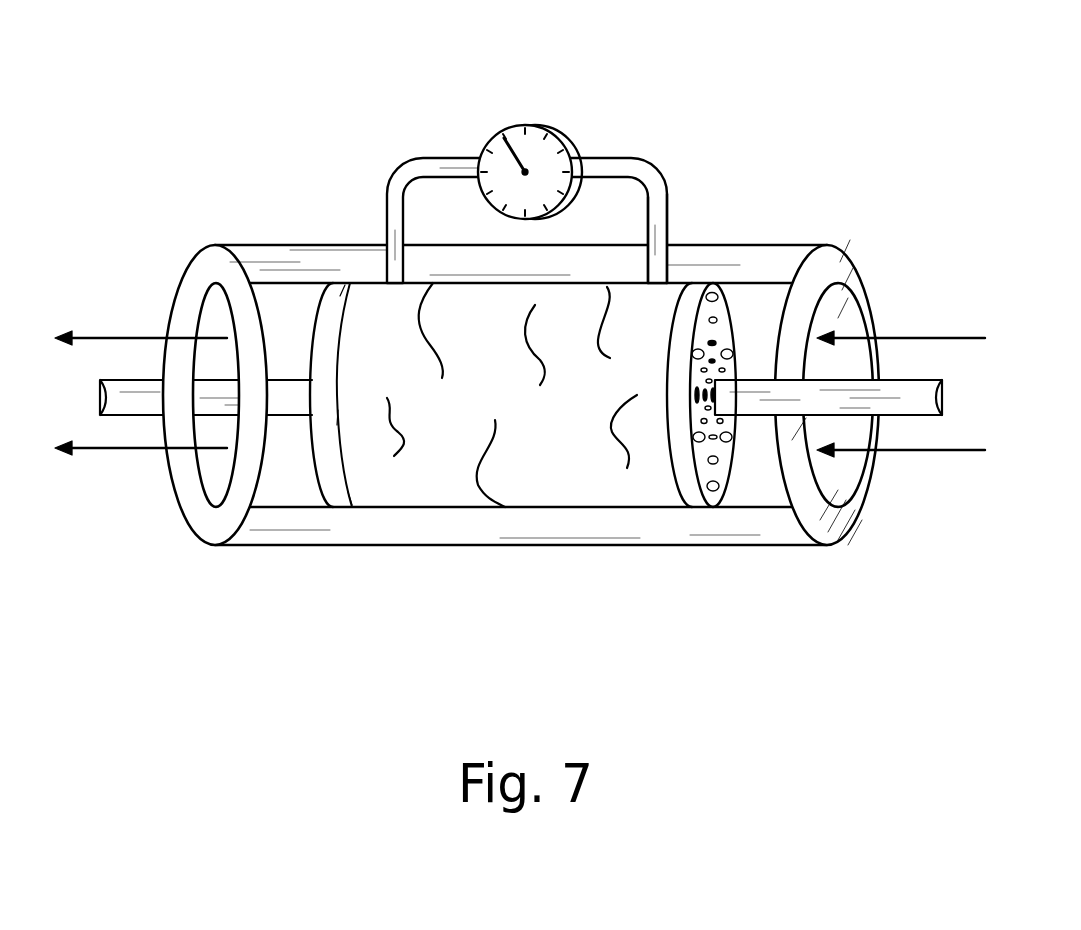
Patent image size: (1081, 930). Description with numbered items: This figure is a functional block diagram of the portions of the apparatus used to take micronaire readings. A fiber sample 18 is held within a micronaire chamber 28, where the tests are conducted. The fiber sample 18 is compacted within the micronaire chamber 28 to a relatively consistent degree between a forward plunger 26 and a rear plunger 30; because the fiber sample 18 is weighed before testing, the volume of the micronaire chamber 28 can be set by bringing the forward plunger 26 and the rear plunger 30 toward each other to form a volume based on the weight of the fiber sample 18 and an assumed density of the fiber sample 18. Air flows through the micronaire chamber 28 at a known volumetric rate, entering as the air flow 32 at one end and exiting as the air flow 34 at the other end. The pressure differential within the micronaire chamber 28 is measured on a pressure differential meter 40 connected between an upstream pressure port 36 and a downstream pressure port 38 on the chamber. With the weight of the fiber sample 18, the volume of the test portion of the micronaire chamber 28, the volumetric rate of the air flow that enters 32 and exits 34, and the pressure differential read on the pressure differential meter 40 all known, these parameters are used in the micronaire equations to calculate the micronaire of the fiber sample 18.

The fiber sample 18 is at (559, 437).
The forward plunger 26 is at (720, 330).
The micronaire chamber 28 is at (725, 540).
The rear plunger 30 is at (325, 338).
The air flow entering 32 is at (926, 392).
The air flow exiting 34 is at (120, 389).
The upstream pressure port 36 is at (660, 187).
The downstream pressure port 38 is at (393, 200).
The pressure differential meter 40 is at (560, 142).